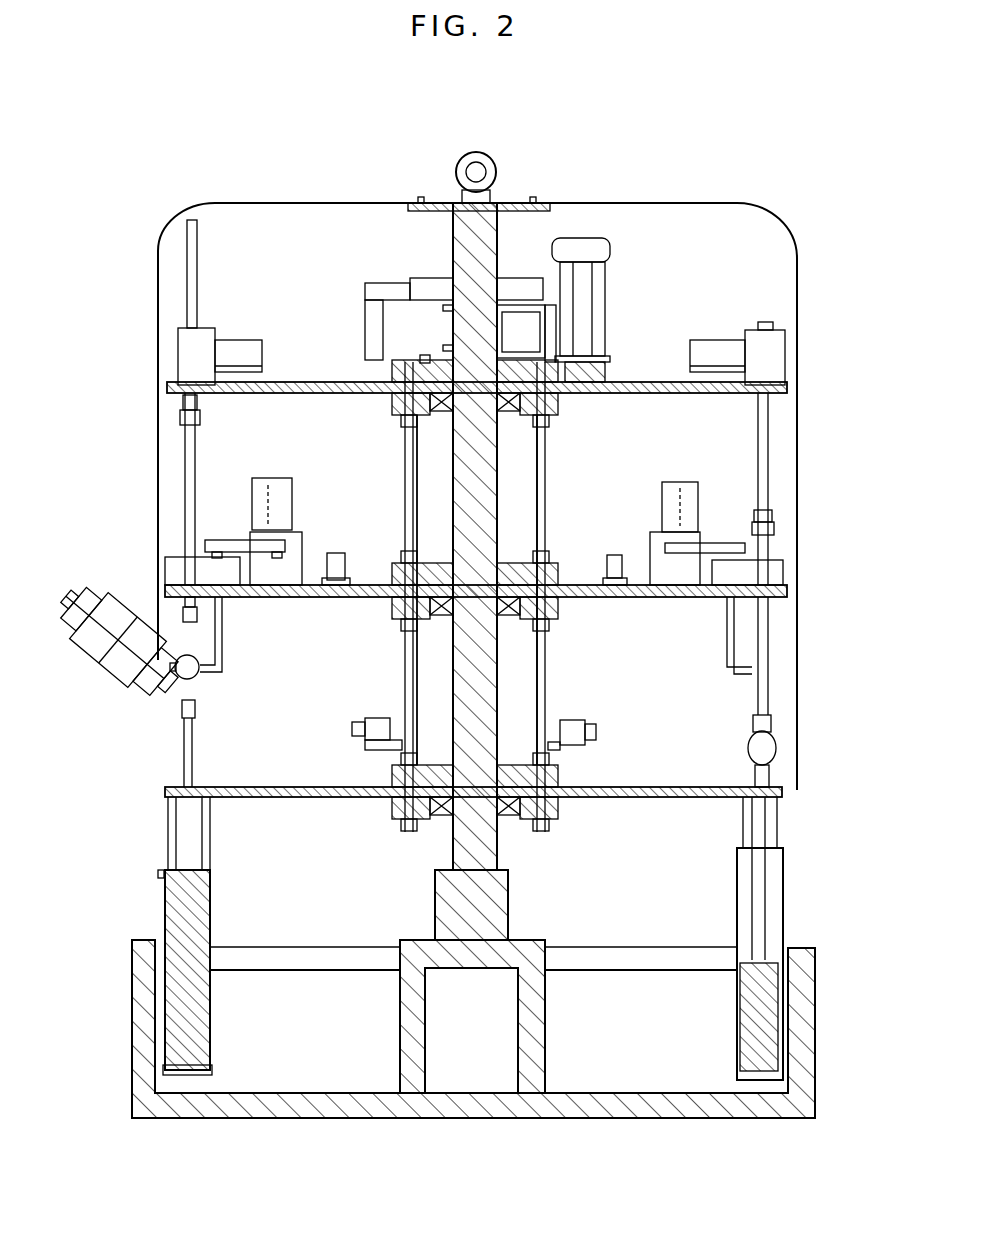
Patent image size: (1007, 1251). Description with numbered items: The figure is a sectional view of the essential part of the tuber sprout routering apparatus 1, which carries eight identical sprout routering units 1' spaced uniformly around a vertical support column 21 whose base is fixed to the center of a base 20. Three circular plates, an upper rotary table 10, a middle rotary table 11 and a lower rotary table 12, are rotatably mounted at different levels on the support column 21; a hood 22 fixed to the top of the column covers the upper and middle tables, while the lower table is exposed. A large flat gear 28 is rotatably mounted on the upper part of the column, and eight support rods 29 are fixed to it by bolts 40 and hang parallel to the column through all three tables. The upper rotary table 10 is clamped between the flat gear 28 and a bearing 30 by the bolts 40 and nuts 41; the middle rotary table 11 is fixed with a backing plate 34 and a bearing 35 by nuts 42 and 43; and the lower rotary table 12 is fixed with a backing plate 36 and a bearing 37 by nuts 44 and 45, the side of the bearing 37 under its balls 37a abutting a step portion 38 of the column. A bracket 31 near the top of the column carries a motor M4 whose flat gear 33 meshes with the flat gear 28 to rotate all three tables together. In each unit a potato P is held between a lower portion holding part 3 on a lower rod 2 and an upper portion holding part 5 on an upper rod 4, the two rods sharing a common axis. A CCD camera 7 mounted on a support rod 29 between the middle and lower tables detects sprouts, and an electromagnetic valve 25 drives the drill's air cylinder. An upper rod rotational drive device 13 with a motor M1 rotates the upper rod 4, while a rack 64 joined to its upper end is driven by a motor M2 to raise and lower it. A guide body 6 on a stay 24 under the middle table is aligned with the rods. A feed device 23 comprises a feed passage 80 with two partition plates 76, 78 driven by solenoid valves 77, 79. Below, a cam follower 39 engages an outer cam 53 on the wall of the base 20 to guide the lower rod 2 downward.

The tuber sprout routering apparatus 1 is at (759, 118).
The sprout routering unit 1' is at (473, 426).
The lower rod 2 is at (194, 746).
The lower portion holding part 3 is at (196, 706).
The upper rod 4 is at (193, 478).
The upper portion holding part 5 is at (198, 614).
The guide body 6 is at (175, 700).
The CCD camera 7 is at (376, 720).
The upper rotary table 10 is at (797, 382).
The middle rotary table 11 is at (788, 594).
The lower rotary table 12 is at (785, 790).
The upper rod rotational drive device 13 is at (172, 570).
The base 20 is at (312, 1105).
The support column 21 is at (490, 245).
The hood 22 is at (205, 203).
The feed device 23 is at (98, 705).
The stay 24 is at (222, 665).
The electromagnetic valve 25 is at (336, 553).
The flat gear 28 is at (422, 360).
The support rod 29 is at (405, 475).
The bearing 30 is at (560, 398).
The bracket 31 is at (556, 315).
The flat gear 33 is at (590, 372).
The backing plate 34 is at (538, 560).
The bearing 35 is at (556, 596).
The backing plate 36 is at (560, 800).
The bearing 37 is at (560, 803).
The balls 37a is at (442, 838).
The step portion 38 is at (500, 838).
The cam follower 39 is at (158, 875).
The bolt 40 is at (396, 360).
The nut 41 is at (398, 422).
The nut 42 is at (401, 565).
The nut 43 is at (398, 620).
The nut 44 is at (396, 770).
The nut 45 is at (400, 832).
The outer cam 53 is at (790, 950).
The rack 64 is at (192, 292).
The partition plate 76 is at (108, 618).
The solenoid valve 77 is at (90, 660).
The partition plate 78 is at (160, 662).
The solenoid valve 79 is at (116, 690).
The feed passage 80 is at (122, 598).
The motor M1 is at (274, 478).
The motor M2 is at (212, 330).
The motor M4 is at (605, 242).
The potato P is at (200, 672).